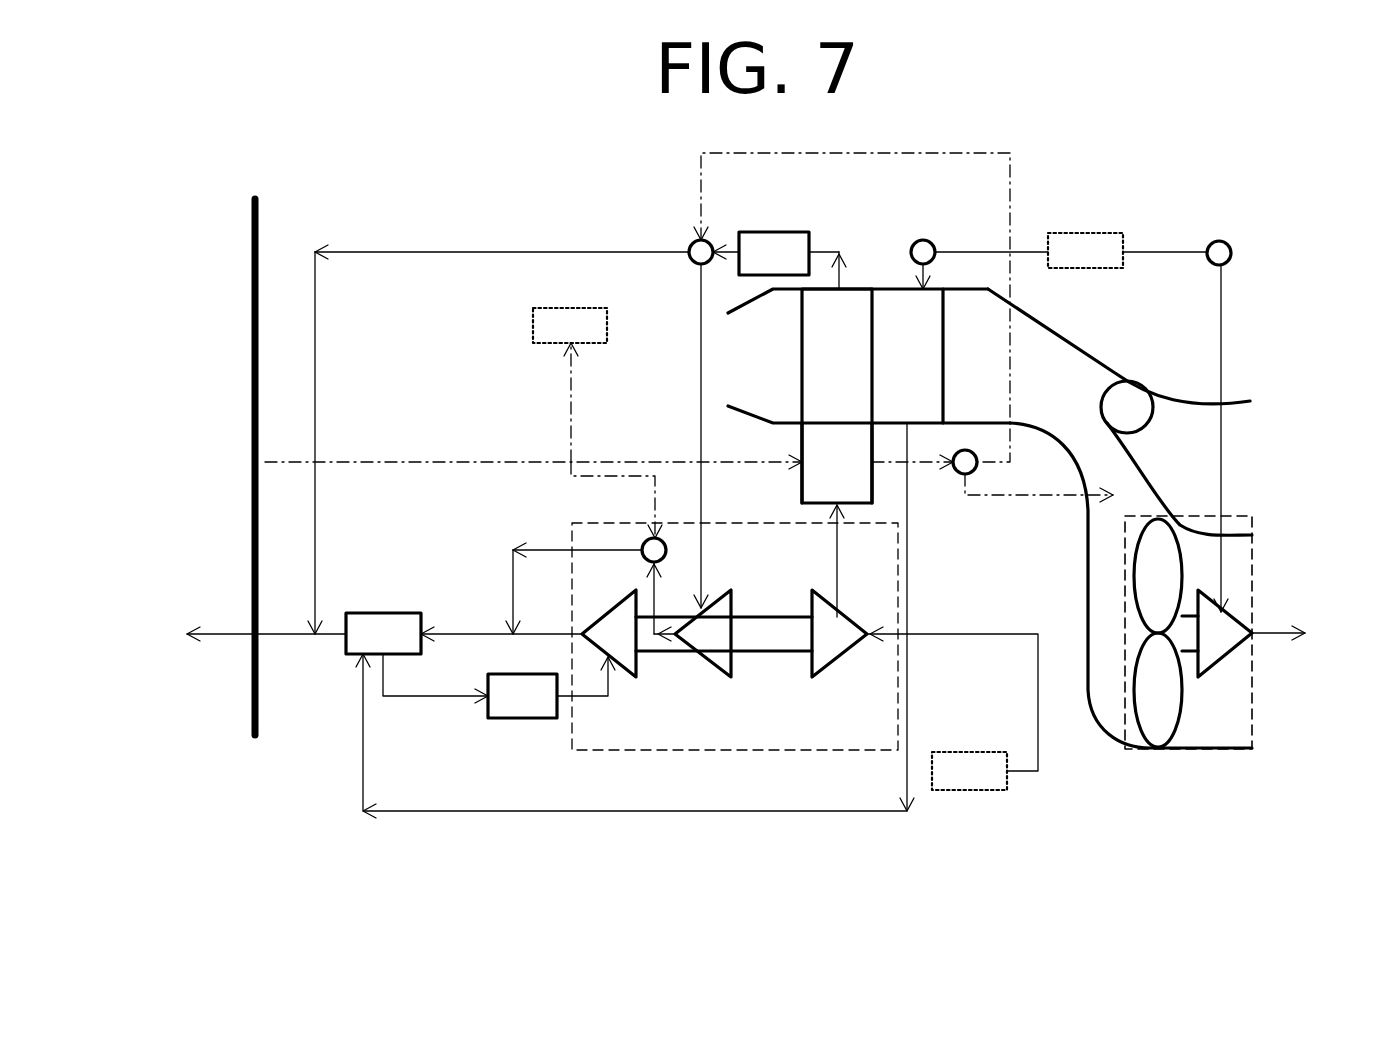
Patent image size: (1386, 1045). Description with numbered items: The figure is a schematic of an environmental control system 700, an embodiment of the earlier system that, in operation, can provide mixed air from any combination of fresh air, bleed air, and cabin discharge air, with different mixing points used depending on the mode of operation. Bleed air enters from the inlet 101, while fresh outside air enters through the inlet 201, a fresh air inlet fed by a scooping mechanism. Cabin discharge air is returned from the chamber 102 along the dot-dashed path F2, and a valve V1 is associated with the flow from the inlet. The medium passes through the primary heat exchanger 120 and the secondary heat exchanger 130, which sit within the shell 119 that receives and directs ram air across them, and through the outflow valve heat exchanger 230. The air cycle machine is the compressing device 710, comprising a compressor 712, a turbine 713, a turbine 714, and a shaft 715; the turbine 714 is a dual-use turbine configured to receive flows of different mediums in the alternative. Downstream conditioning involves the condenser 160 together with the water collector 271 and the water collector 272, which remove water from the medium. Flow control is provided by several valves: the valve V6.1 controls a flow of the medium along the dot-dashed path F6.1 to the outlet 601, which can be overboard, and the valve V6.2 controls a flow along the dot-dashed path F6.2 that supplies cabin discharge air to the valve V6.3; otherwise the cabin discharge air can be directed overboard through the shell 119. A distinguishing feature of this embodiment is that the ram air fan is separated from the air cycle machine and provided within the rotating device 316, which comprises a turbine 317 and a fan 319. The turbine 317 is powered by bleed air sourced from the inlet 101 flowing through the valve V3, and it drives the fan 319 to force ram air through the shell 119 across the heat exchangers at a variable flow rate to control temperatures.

The environmental control system 700 is at (1192, 135).
The chamber 102 is at (252, 200).
The condenser 160 is at (383, 633).
The water collector 272 is at (522, 696).
The water collector 271 is at (774, 253).
The inlet 101 is at (1085, 250).
The outlet 601 is at (570, 325).
The inlet 201 is at (969, 771).
The secondary heat exchanger 130 is at (837, 396).
The primary heat exchanger 120 is at (900, 396).
The outflow valve heat exchanger 230 is at (837, 463).
The shell 119 is at (1132, 378).
The fan 319 is at (1171, 530).
The rotating device 316 is at (1125, 752).
The turbine 317 is at (1217, 633).
The compressing device 710 is at (757, 753).
The compressor 712 is at (839, 633).
The turbine 713 is at (611, 633).
The turbine 714 is at (705, 633).
The shaft 715 is at (771, 654).
The valve V6.3 is at (692, 243).
The valve V1 is at (914, 243).
The valve V3 is at (1208, 244).
The valve V6.1 is at (645, 541).
The valve V6.2 is at (960, 476).
The path F2 is at (464, 458).
The path F6.1 is at (580, 400).
The path F6.2 is at (1013, 157).